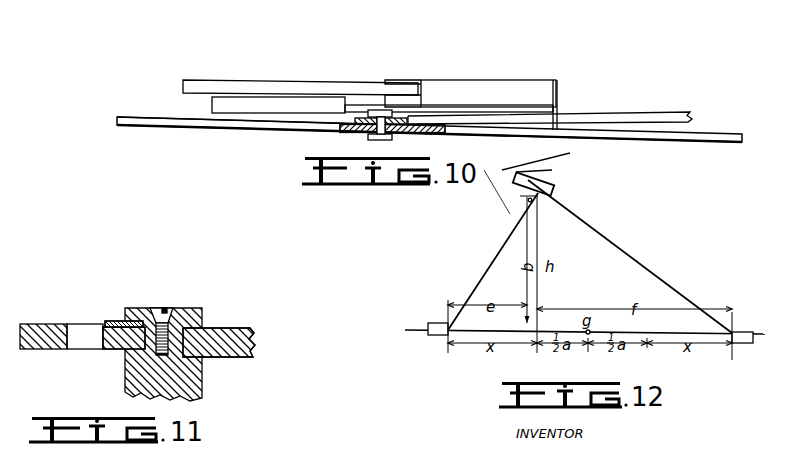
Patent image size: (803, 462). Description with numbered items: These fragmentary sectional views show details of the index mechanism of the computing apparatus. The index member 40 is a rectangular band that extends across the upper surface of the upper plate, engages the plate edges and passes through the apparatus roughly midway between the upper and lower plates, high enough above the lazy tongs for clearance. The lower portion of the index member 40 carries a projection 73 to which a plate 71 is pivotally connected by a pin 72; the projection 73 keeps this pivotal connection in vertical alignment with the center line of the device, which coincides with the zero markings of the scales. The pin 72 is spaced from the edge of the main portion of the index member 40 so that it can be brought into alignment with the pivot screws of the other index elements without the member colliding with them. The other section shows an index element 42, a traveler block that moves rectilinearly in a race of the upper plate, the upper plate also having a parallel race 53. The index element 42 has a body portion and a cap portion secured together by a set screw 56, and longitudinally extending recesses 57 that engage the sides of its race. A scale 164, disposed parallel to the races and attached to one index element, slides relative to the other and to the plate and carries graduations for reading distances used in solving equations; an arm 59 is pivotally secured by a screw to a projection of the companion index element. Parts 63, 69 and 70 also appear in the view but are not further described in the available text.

In FIG. 10, the index member 40 is at (718, 137).
In FIG. 10, the arm 59 is at (612, 117).
In FIG. 10, the upper plate 63 is at (265, 87).
In FIG. 10, the block 69 is at (480, 87).
In FIG. 10, the intermediate plate 70 is at (318, 107).
In FIG. 10, the plate 71 is at (290, 120).
In FIG. 10, the pin 72 is at (369, 138).
In FIG. 10, the projection 73 is at (403, 130).
In FIG. 11, the index element 42 is at (138, 304).
In FIG. 11, the race 53 is at (78, 325).
In FIG. 11, the set screw 56 is at (163, 338).
In FIG. 11, the recess 57 is at (185, 345).
In FIG. 11, the scale 164 is at (108, 321).